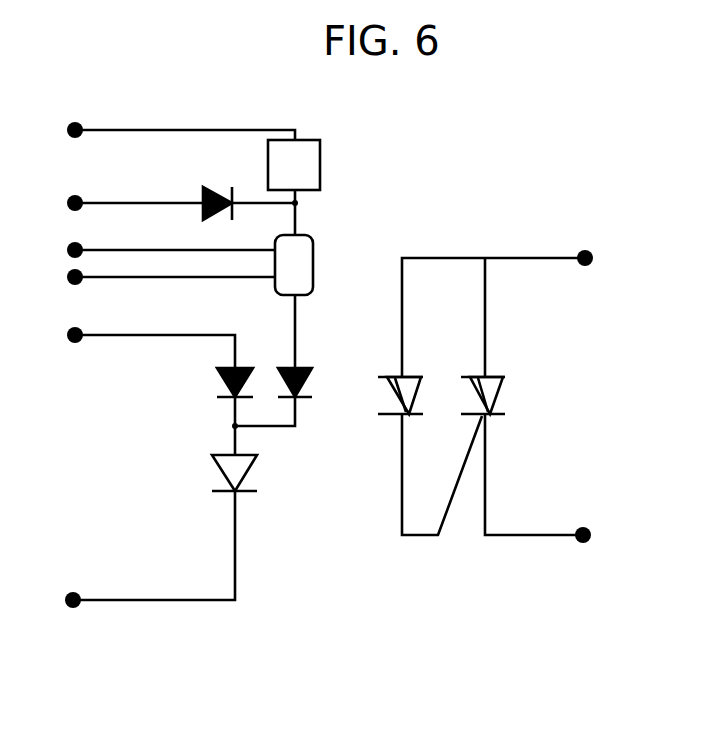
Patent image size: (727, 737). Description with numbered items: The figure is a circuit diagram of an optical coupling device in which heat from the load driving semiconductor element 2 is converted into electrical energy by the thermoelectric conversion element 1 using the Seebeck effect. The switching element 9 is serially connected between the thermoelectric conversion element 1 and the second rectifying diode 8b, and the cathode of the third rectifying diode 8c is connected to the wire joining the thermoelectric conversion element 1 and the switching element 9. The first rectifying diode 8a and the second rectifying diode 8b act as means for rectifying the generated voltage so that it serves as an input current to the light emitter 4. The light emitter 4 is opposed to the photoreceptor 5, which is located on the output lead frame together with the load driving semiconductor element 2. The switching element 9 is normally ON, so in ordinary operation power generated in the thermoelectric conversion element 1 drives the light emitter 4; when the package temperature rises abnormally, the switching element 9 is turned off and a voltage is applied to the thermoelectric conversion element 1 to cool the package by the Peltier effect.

The thermoelectric conversion element 1 is at (320, 148).
The switching element 9 is at (313, 250).
The third rectifying diode 8c is at (203, 192).
The first rectifying diode 8a is at (222, 378).
The second rectifying diode 8b is at (310, 385).
The light emitter 4 is at (218, 458).
The photoreceptor 5 is at (413, 373).
The load driving semiconductor element 2 is at (492, 373).